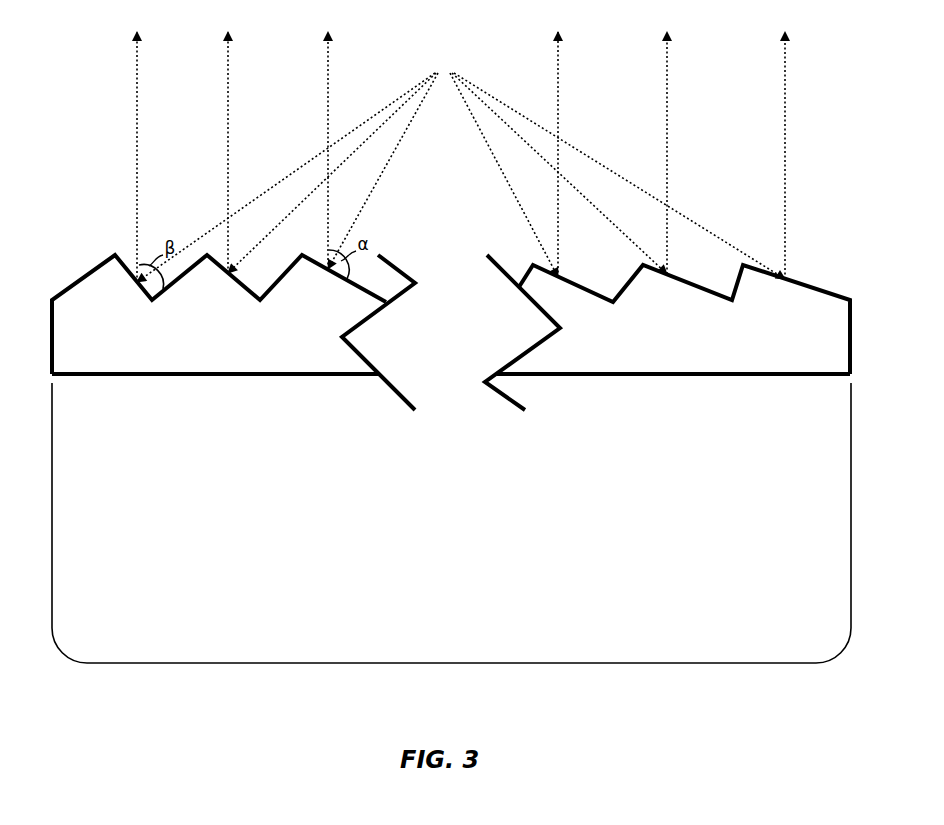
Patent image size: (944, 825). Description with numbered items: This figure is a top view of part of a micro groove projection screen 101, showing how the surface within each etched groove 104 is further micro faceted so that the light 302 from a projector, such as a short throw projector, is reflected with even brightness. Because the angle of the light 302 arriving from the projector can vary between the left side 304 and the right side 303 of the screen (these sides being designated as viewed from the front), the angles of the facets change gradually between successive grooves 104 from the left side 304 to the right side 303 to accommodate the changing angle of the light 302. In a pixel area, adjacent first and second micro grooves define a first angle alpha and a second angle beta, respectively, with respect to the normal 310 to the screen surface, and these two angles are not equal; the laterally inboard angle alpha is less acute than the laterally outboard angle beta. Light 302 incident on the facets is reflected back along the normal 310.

The micro groove projection screen 101 is at (665, 647).
The micro etched grooves 104 is at (152, 303).
The light 302 is at (461, 168).
The right side 303 is at (217, 382).
The left side 304 is at (656, 382).
The normal 310 is at (330, 92).